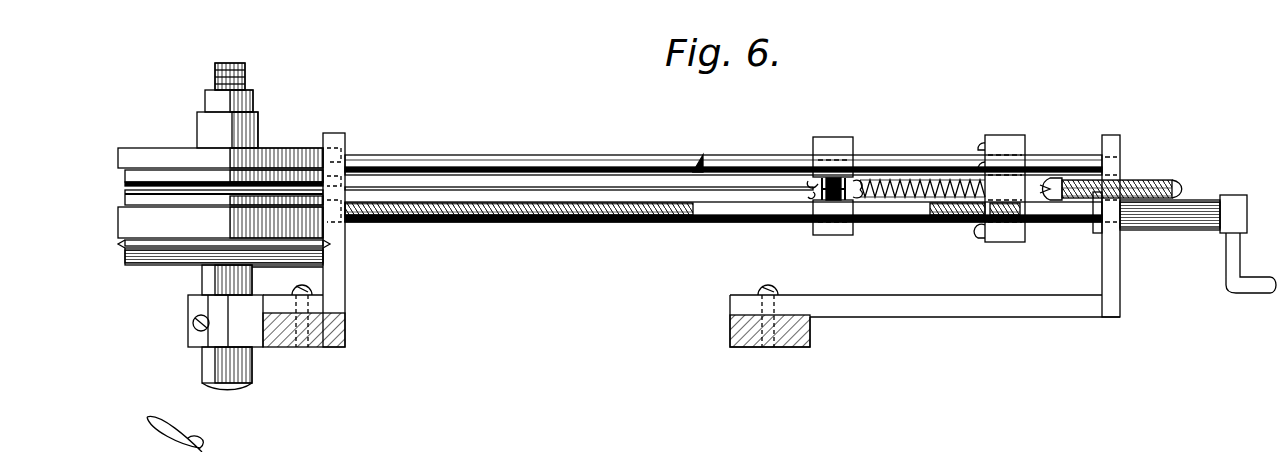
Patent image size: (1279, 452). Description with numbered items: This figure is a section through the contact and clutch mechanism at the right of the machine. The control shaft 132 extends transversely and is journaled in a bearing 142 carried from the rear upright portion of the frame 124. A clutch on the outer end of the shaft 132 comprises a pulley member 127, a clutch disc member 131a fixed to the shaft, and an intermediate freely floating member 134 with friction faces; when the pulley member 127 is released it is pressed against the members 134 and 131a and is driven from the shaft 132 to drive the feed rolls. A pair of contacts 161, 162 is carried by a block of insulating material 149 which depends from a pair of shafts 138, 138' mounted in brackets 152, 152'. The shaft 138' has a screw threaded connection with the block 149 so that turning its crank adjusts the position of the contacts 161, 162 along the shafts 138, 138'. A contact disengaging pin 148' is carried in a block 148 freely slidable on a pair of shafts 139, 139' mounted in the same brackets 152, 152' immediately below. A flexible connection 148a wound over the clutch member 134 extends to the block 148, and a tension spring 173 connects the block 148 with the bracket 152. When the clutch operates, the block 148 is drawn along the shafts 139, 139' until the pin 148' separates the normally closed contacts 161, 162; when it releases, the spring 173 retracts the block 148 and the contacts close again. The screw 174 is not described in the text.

The control shaft 132 is at (244, 75).
The clutch disc member 131a is at (278, 158).
The freely floating member 134 is at (153, 182).
The bracket 152' is at (327, 226).
The pulley member 127 is at (165, 256).
The bearing 142 is at (193, 327).
The frame 124 is at (340, 333).
The flexible connection 148a is at (590, 188).
The shaft 139 is at (723, 149).
The contact 161 is at (833, 180).
The contact disengaging pin 148' is at (627, 140).
The shaft 139' is at (723, 232).
The block 148 is at (830, 206).
The contact 162 is at (835, 196).
The tension spring 173 is at (945, 196).
The shaft 138 is at (976, 135).
The block of insulating material 149 is at (1008, 143).
The bracket 152 is at (1139, 200).
The adjusting screw 174 is at (1165, 183).
The shaft 138' is at (974, 241).